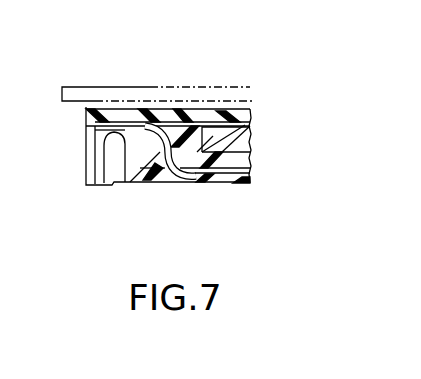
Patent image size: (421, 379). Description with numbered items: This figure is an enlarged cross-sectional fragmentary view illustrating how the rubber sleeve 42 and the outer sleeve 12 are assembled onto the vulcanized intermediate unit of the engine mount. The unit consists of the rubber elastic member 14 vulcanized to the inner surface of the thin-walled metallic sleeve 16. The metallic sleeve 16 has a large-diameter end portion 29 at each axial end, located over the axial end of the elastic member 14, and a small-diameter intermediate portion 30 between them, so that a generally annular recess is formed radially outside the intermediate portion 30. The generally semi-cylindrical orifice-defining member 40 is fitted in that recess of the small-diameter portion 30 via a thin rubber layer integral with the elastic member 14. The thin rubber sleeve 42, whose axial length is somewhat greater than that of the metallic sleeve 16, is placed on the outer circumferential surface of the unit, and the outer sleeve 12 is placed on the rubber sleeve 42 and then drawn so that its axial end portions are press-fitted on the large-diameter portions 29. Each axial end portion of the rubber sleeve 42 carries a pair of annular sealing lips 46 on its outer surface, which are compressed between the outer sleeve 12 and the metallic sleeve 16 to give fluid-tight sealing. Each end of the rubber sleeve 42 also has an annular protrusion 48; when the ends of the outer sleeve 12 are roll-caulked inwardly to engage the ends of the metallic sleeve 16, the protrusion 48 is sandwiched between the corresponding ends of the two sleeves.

The outer sleeve 12 is at (80, 124).
The elastic member 14 is at (138, 158).
The metallic sleeve 16 is at (172, 181).
The large-diameter end portion 29 is at (113, 130).
The small-diameter intermediate portion 30 is at (218, 175).
The orifice-defining member 40 is at (232, 128).
The rubber sleeve 42 is at (225, 108).
The annular sealing lip 46 is at (141, 107).
The annular protrusion 48 is at (89, 106).